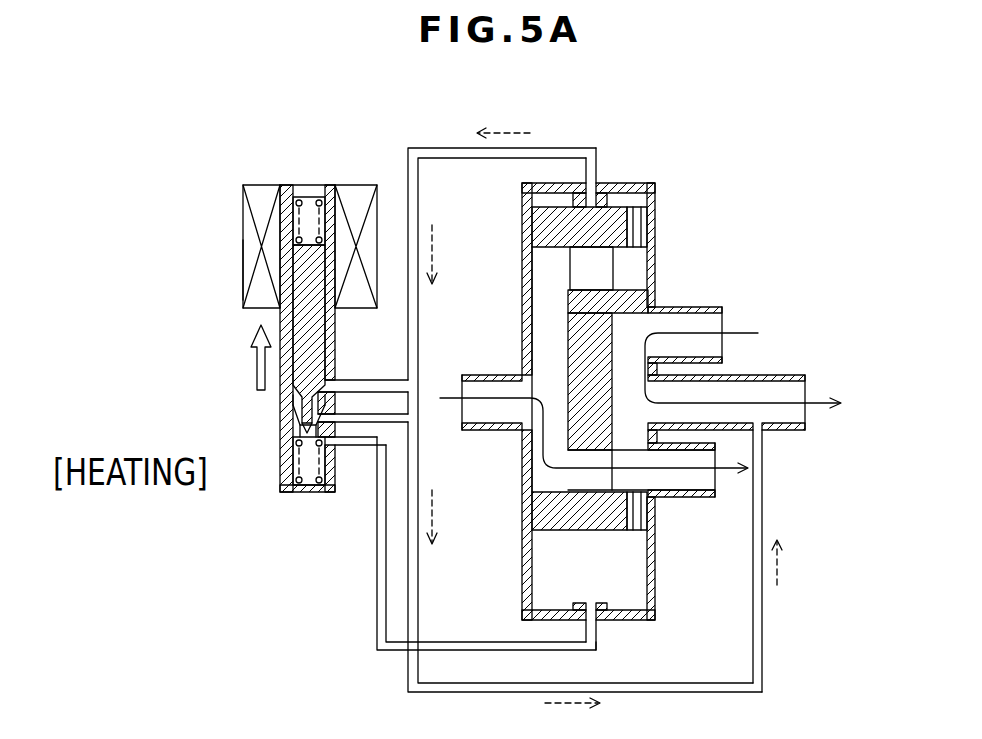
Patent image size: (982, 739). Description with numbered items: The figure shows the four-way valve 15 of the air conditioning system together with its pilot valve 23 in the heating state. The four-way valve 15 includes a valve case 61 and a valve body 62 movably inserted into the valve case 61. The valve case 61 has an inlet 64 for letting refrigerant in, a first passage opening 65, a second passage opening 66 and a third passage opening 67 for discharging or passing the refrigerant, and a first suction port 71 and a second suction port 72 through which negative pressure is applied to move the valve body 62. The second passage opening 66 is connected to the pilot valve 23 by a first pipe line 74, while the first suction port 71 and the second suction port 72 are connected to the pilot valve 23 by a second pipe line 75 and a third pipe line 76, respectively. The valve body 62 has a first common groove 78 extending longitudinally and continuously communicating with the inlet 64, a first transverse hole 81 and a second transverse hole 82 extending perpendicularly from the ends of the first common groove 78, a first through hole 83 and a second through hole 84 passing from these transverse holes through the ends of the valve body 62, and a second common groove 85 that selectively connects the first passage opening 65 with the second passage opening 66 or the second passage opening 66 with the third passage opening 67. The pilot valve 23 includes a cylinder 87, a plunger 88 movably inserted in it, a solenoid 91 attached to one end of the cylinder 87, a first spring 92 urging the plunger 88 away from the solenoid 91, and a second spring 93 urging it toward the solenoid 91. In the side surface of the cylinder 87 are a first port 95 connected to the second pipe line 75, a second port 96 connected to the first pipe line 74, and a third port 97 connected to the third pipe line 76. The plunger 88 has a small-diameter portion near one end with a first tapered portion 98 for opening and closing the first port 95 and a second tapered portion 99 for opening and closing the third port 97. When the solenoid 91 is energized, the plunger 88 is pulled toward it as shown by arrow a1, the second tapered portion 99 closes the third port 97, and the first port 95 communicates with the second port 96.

The four-way valve 15 is at (825, 178).
The pilot valve 23 is at (226, 217).
The valve case 61 is at (660, 218).
The valve body 62 is at (612, 540).
The inlet 64 is at (500, 373).
The first passage opening 65 is at (712, 306).
The second passage opening 66 is at (790, 375).
The third passage opening 67 is at (668, 500).
The first suction port 71 is at (598, 178).
The second suction port 72 is at (606, 625).
The first pipe line 74 is at (762, 625).
The second pipe line 75 is at (417, 148).
The third pipe line 76 is at (377, 607).
The first common groove 78 is at (550, 320).
The first transverse hole 81 is at (612, 287).
The second transverse hole 82 is at (598, 482).
The first through hole 83 is at (630, 262).
The second through hole 84 is at (628, 531).
The second common groove 85 is at (702, 408).
The cylinder 87 is at (290, 185).
The plunger 88 is at (290, 318).
The solenoid 91 is at (243, 288).
The first spring 92 is at (309, 197).
The second spring 93 is at (308, 490).
The first port 95 is at (330, 387).
The second port 96 is at (322, 414).
The third port 97 is at (330, 445).
The first tapered portion 98 is at (282, 415).
The second tapered portion 99 is at (282, 428).
The arrow a1 is at (256, 358).